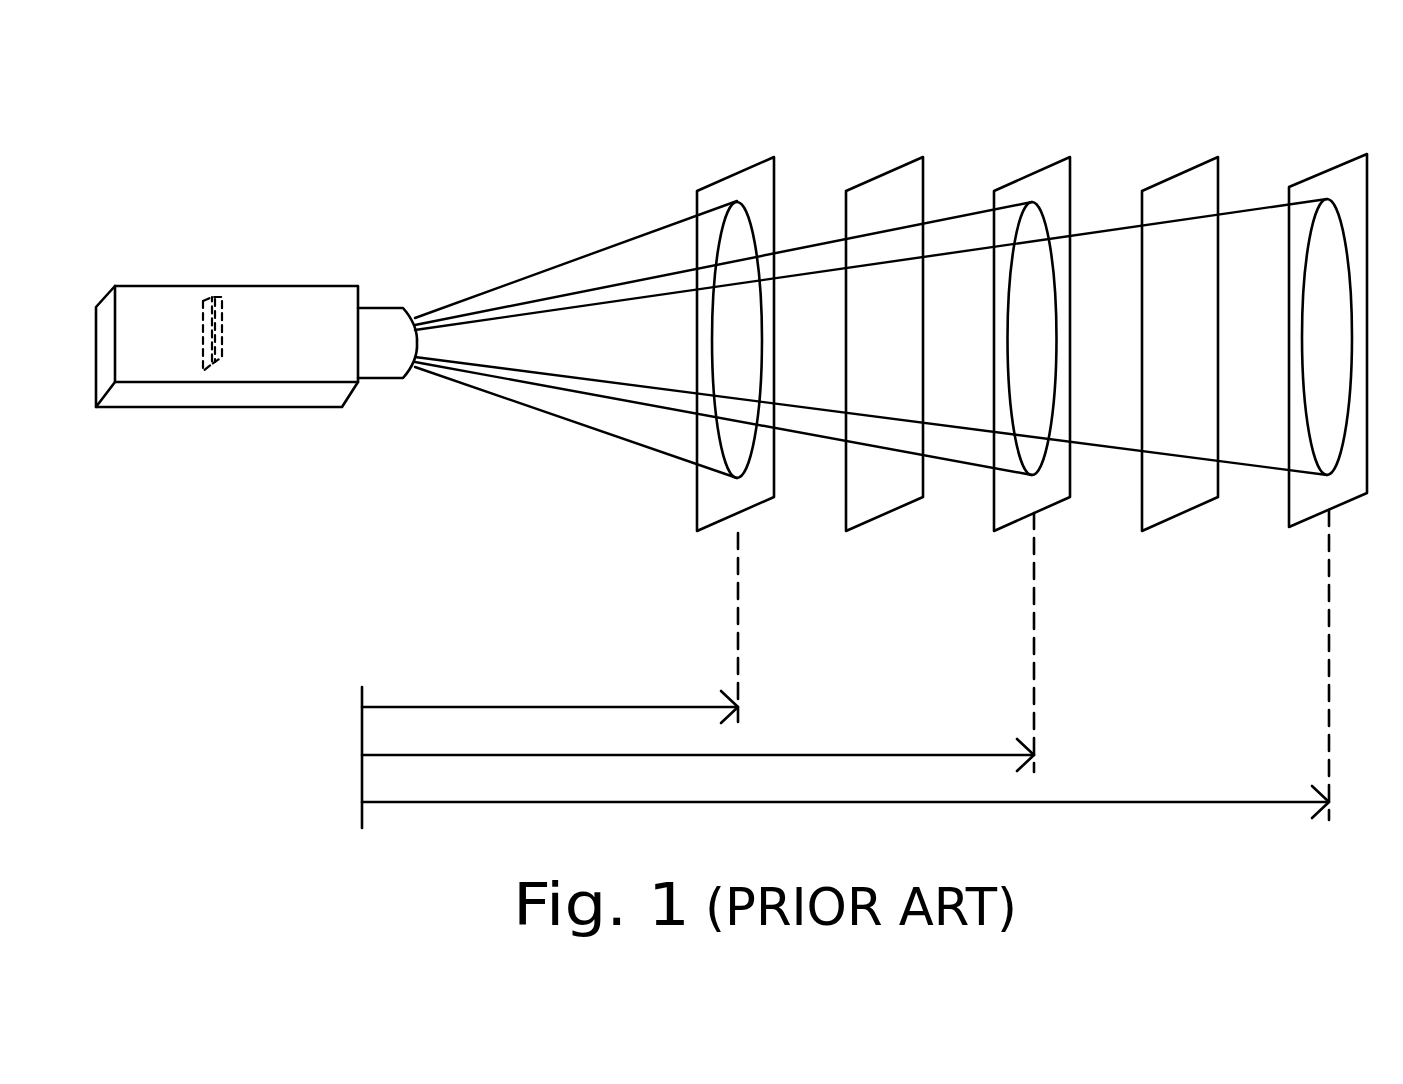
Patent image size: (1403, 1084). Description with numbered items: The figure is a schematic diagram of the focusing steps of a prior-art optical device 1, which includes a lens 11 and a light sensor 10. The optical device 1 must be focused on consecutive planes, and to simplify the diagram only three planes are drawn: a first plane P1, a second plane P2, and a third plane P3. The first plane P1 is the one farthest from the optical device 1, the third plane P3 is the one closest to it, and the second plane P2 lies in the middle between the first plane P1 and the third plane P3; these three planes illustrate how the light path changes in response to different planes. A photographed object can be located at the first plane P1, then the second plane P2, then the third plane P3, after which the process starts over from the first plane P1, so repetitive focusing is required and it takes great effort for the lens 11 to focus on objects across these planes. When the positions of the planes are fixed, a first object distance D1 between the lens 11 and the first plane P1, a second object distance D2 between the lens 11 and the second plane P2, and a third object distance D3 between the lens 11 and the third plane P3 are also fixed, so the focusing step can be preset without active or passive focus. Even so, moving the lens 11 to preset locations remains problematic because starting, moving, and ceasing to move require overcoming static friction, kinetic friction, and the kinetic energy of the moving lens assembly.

The optical device 1 is at (212, 162).
The light sensor 10 is at (203, 305).
The lens 11 is at (382, 322).
The first plane P1 is at (1324, 185).
The second plane P2 is at (1029, 186).
The third plane P3 is at (733, 188).
The first object distance D1 is at (869, 668).
The second object distance D2 is at (721, 645).
The third object distance D3 is at (573, 631).